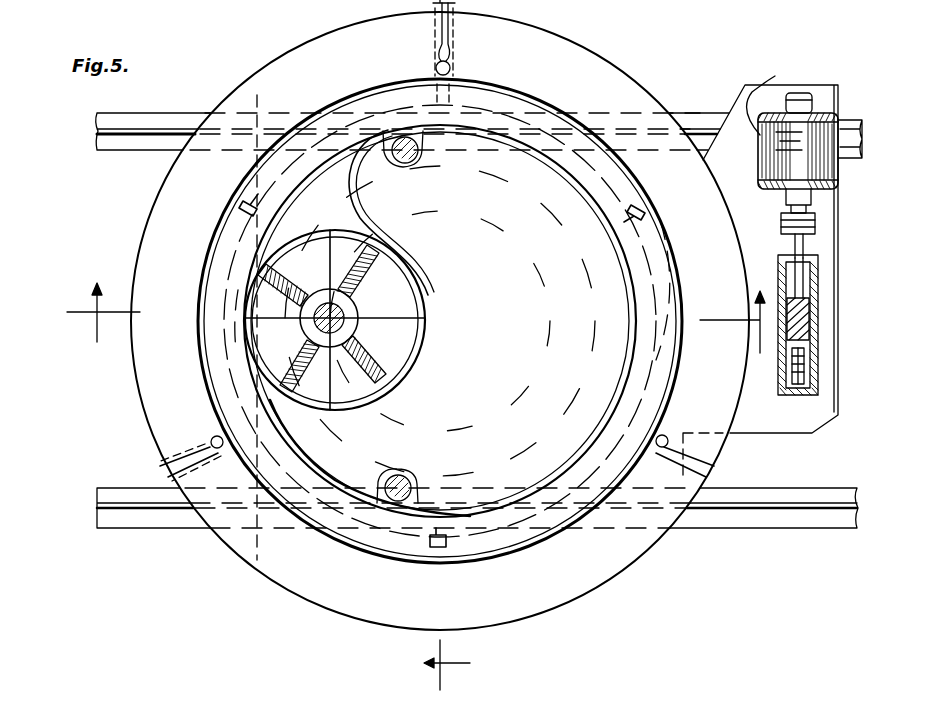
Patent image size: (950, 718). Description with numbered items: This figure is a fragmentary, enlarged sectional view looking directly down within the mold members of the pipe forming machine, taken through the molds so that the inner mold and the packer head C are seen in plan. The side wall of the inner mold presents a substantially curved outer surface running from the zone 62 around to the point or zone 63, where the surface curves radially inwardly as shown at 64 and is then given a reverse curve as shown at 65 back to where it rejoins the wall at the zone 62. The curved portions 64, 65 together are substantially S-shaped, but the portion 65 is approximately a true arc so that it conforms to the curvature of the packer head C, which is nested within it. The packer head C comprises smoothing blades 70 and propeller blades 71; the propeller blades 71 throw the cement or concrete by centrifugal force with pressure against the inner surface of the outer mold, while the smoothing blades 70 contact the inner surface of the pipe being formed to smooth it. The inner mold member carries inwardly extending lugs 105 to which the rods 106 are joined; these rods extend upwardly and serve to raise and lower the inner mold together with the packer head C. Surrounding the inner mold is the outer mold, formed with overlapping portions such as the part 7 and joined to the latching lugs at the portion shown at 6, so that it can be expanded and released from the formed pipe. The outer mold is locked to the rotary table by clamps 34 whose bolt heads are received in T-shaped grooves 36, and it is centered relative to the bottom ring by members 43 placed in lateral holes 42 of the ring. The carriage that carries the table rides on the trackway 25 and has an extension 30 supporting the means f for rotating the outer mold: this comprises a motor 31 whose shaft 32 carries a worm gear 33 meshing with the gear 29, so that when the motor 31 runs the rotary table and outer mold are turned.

The trackway 25 is at (99, 115).
The T-shaped groove 36 is at (440, 35).
The clamps 34 is at (450, 60).
The lateral holes 42 is at (240, 206).
The members 43 is at (236, 216).
The zone 62 is at (253, 383).
The packer head C is at (262, 344).
The point or zone 63 is at (345, 185).
The radially inwardly curved portion 64 is at (362, 184).
The reverse-curved wall portion 65 is at (414, 345).
The smoothing blades 70 is at (303, 425).
The propeller blades 71 is at (395, 402).
The inwardly extending lugs 105 is at (425, 153).
The rods 106 is at (420, 162).
The overlapping portion 7 is at (411, 318).
The mold portion carrying lugs 6 is at (447, 665).
The extension 30 is at (812, 420).
The motor 31 is at (833, 190).
The motor shaft 32 is at (803, 268).
The worm gear 33 is at (812, 325).
The gear 29 is at (806, 380).
The means for rotating the outer mold f is at (761, 96).